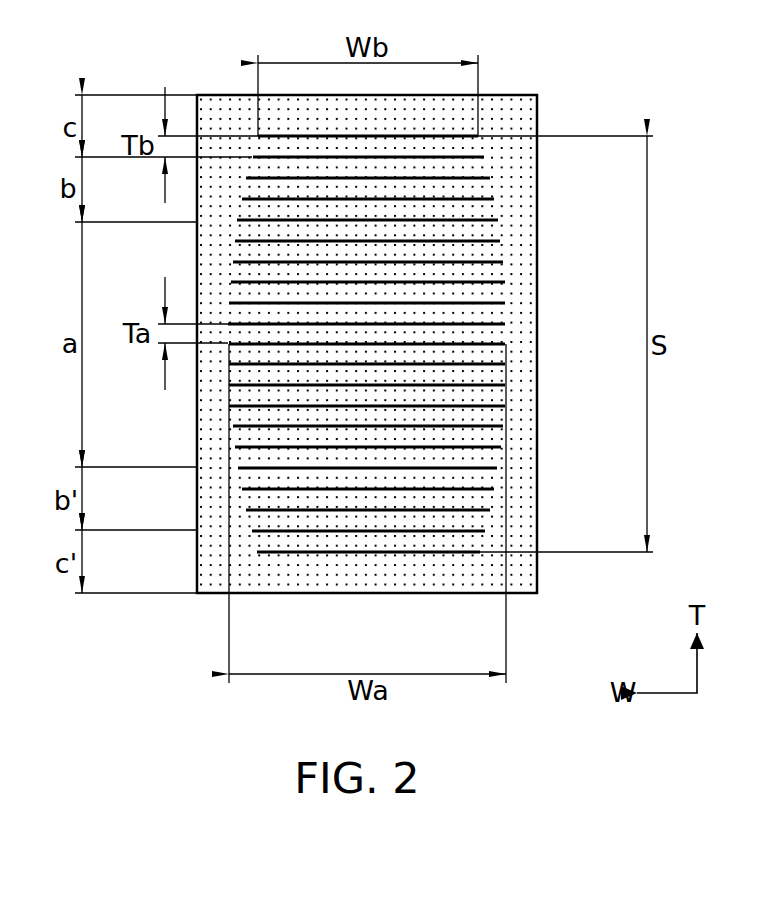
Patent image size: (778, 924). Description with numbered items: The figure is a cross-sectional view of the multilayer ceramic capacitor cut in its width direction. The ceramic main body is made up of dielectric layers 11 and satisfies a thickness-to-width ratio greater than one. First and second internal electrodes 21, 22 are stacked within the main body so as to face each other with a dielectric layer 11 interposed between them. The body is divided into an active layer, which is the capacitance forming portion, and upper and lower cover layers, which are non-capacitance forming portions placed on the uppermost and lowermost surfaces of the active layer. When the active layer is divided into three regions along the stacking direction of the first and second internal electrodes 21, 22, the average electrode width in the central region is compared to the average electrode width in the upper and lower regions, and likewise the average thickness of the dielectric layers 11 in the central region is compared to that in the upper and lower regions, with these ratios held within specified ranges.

The dielectric layer 11 is at (530, 257).
The first internal electrode 21 is at (470, 179).
The second internal electrode 22 is at (470, 199).